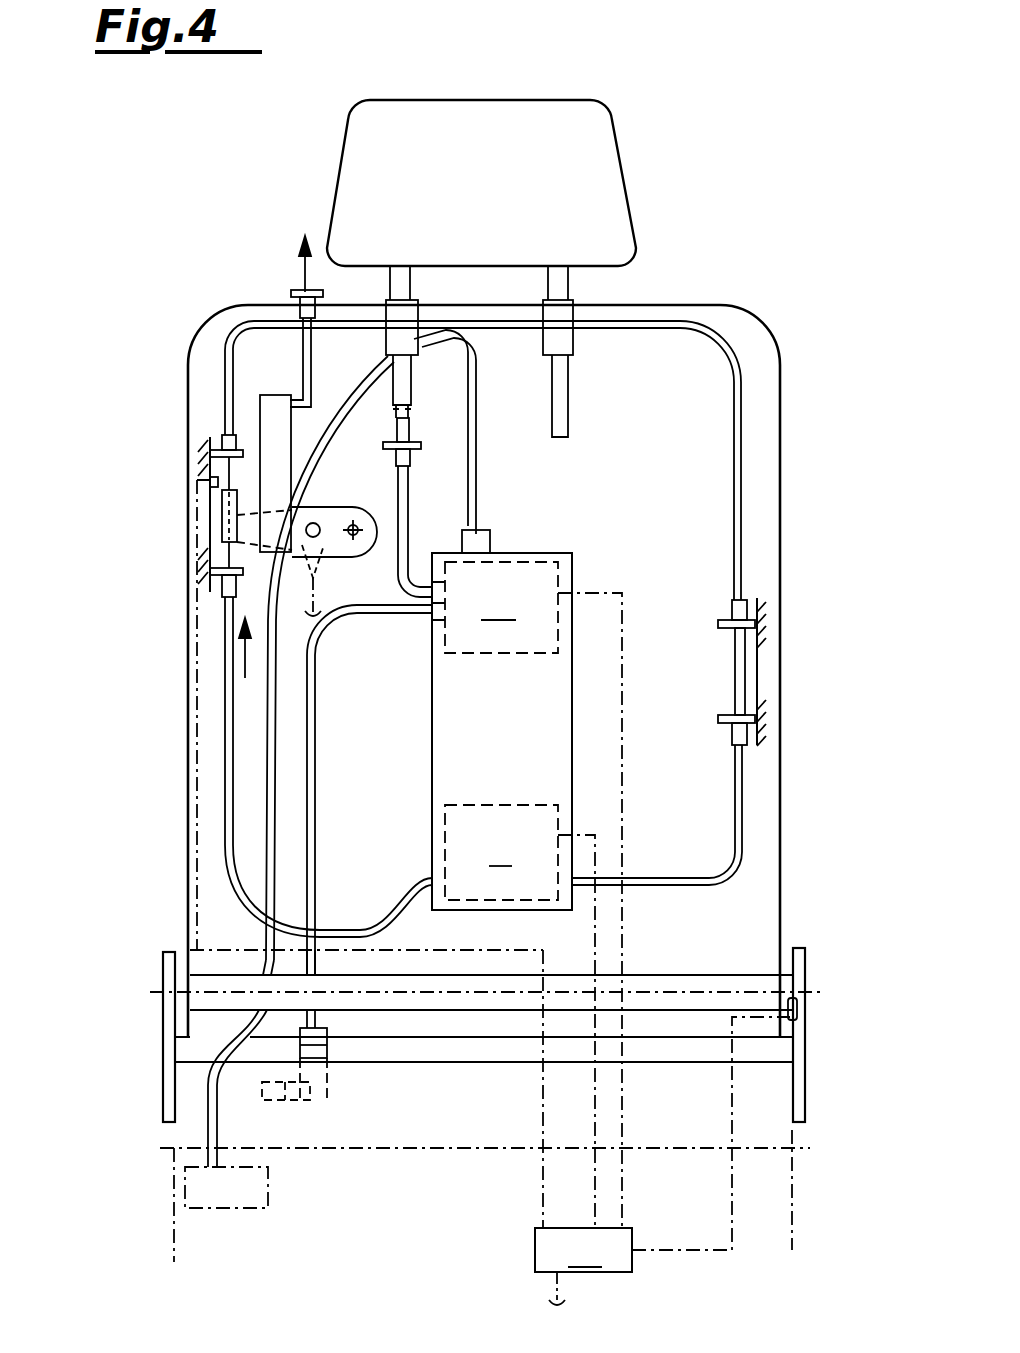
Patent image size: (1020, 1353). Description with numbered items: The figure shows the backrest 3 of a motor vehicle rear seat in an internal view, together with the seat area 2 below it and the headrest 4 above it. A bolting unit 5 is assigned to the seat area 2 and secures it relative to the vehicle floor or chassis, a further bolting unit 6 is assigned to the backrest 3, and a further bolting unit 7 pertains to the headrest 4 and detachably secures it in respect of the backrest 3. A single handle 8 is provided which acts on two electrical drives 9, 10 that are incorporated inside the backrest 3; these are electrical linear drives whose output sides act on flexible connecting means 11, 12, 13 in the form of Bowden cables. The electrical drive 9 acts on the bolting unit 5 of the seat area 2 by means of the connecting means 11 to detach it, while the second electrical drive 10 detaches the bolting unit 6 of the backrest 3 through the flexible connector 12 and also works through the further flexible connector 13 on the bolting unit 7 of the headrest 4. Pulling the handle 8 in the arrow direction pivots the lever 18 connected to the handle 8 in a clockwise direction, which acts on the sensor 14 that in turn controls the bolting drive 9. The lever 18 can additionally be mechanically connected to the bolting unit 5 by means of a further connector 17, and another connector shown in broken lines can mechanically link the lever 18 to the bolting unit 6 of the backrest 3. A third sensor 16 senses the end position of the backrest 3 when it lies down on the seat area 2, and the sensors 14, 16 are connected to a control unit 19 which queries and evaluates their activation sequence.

The seat area 2 is at (165, 1245).
The backrest 3 is at (764, 338).
The headrest 4 is at (608, 102).
The bolting unit 5 is at (238, 1208).
The bolting unit 6 is at (318, 1098).
The bolting unit 7 is at (434, 449).
The single handle 8 is at (300, 291).
The electrical drive 9 is at (520, 1016).
The electrical drive 10 is at (527, 879).
The connecting means 11 is at (268, 755).
The flexible connector 12 is at (310, 768).
The flexible connector 13 is at (410, 500).
The sensor 14 is at (212, 482).
The sensor 16 is at (800, 1008).
The connector 17 is at (227, 680).
The lever 18 is at (336, 512).
The control unit 19 is at (663, 1127).